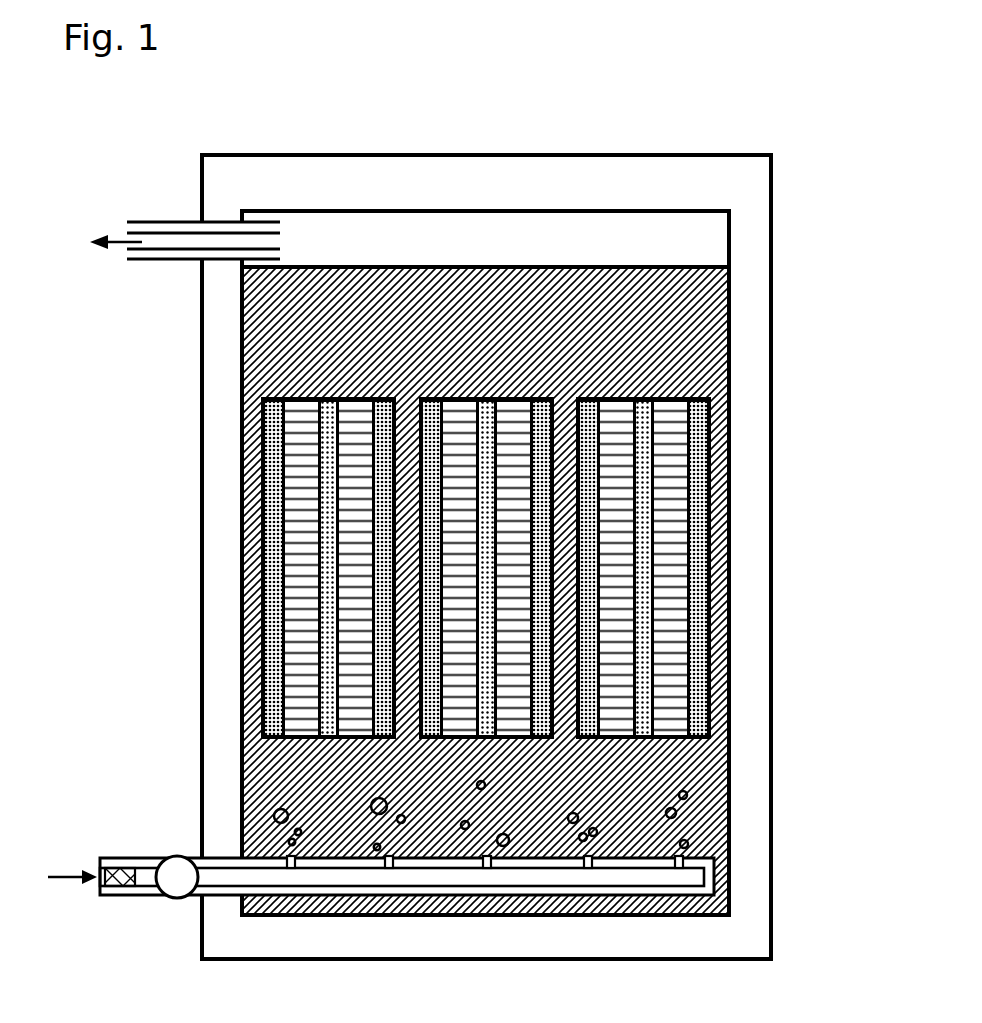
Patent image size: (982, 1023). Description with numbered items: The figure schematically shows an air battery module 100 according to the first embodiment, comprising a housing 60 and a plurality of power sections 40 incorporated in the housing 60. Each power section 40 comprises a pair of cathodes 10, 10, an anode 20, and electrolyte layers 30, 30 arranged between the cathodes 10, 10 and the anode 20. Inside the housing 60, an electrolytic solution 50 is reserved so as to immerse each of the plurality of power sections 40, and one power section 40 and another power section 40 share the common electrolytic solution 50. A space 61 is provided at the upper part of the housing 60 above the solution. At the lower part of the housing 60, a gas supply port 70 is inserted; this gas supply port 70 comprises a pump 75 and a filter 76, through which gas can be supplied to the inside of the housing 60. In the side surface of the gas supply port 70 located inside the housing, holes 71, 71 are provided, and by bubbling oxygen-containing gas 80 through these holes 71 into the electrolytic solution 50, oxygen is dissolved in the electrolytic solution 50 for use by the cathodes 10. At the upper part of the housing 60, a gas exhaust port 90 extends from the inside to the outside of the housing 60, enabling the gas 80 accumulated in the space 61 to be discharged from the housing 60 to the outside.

The air battery module 100 is at (467, 84).
The cathode 10 is at (273, 524).
The anode 20 is at (330, 613).
The electrolyte layer 30 is at (300, 571).
The power section 40 is at (487, 600).
The electrolytic solution 50 is at (713, 349).
The housing 60 is at (745, 255).
The space 61 is at (708, 221).
The gas supply port 70 is at (213, 887).
The hole 71 is at (296, 880).
The pump 75 is at (172, 885).
The filter 76 is at (116, 868).
The gas 80 is at (370, 806).
The gas exhaust port 90 is at (170, 253).